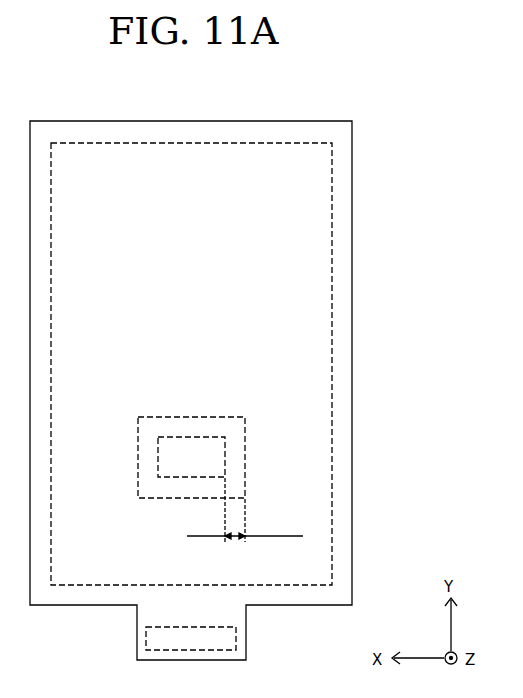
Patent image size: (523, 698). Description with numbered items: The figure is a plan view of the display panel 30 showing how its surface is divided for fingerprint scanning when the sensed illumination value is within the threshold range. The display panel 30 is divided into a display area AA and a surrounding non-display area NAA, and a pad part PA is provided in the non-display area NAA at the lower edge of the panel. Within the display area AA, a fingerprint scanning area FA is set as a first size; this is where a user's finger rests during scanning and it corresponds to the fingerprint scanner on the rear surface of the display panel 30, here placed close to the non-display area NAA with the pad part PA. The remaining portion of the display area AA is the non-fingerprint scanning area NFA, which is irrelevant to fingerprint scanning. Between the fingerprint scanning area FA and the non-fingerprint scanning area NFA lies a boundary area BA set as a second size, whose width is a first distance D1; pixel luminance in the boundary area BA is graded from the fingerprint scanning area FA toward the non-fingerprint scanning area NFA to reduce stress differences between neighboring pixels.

The display panel 30 is at (352, 121).
The non-display area NAA is at (223, 131).
The non-fingerprint scanning area NFA is at (300, 311).
The display area AA is at (438, 305).
The boundary area BA is at (246, 432).
The fingerprint scanning area FA is at (226, 457).
The first distance D1 is at (245, 510).
The pad part PA is at (237, 645).